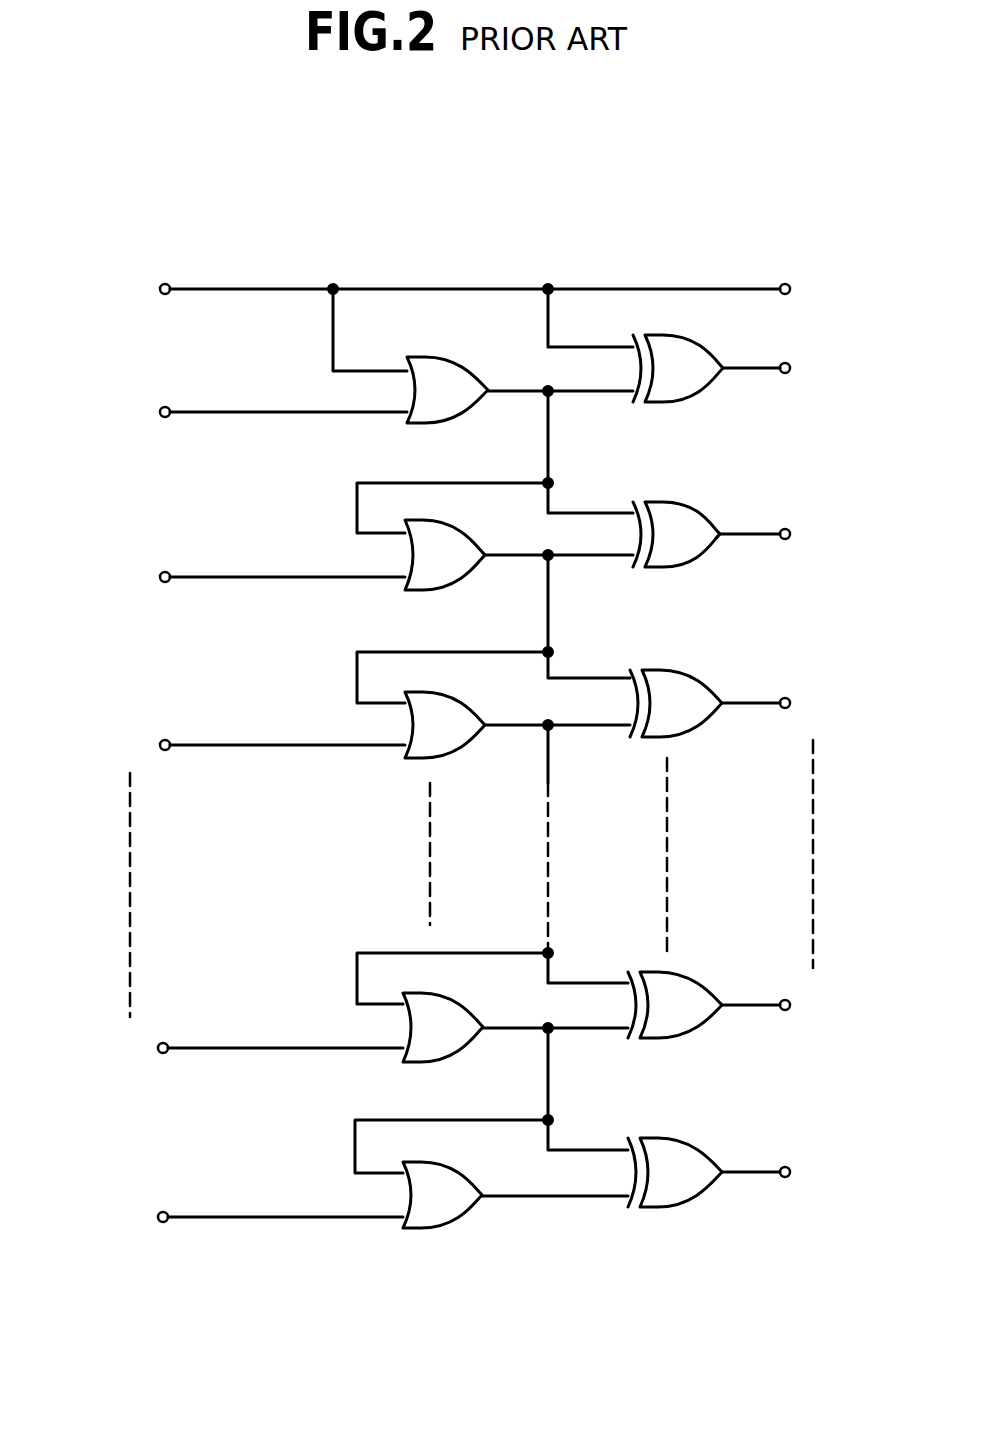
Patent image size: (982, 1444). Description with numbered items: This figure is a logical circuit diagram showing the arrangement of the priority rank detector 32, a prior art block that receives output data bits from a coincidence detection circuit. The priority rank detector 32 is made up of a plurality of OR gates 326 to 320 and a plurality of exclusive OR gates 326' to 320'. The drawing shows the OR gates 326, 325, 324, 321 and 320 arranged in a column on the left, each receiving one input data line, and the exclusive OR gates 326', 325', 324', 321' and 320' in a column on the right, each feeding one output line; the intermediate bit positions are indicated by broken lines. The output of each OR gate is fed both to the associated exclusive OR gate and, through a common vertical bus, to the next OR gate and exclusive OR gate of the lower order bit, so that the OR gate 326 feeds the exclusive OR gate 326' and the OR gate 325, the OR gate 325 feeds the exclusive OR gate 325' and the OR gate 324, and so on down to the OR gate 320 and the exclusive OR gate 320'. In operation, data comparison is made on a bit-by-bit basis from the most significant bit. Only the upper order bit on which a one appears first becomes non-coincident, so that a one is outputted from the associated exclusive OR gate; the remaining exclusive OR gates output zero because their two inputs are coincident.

The priority rank detector 32 is at (375, 272).
The OR gate 326 is at (415, 417).
The OR gate 325 is at (419, 584).
The OR gate 324 is at (453, 774).
The OR gate 321 is at (415, 1054).
The OR gate 320 is at (442, 1246).
The exclusive OR gate 326' is at (711, 401).
The exclusive OR gate 325' is at (708, 577).
The exclusive OR gate 324' is at (686, 745).
The exclusive OR gate 321' is at (690, 1044).
The exclusive OR gate 320' is at (675, 1223).